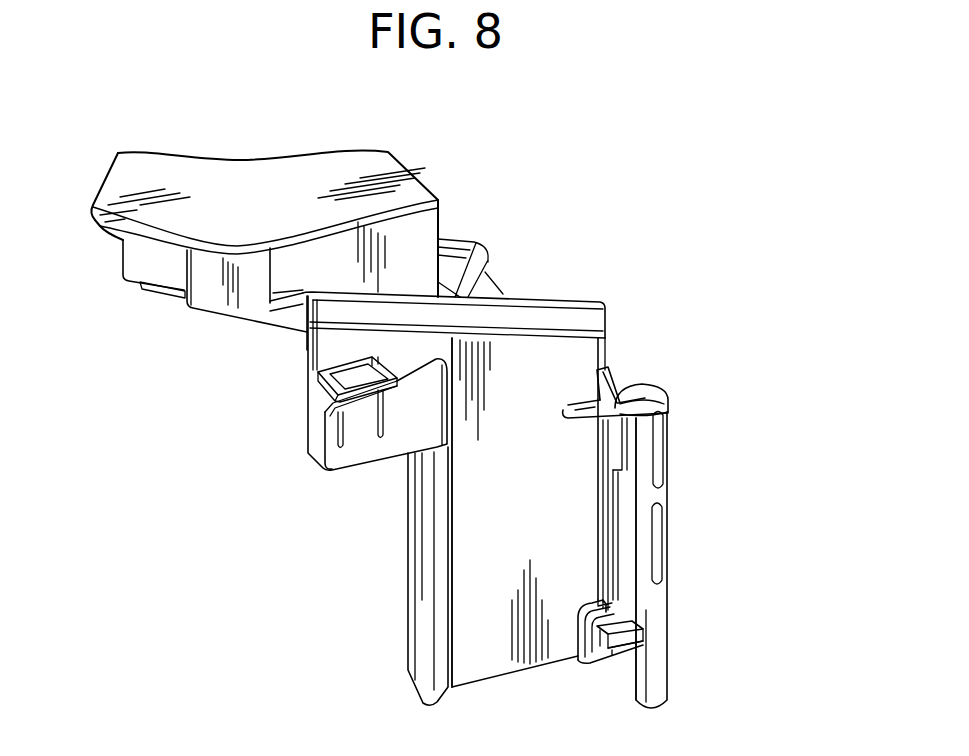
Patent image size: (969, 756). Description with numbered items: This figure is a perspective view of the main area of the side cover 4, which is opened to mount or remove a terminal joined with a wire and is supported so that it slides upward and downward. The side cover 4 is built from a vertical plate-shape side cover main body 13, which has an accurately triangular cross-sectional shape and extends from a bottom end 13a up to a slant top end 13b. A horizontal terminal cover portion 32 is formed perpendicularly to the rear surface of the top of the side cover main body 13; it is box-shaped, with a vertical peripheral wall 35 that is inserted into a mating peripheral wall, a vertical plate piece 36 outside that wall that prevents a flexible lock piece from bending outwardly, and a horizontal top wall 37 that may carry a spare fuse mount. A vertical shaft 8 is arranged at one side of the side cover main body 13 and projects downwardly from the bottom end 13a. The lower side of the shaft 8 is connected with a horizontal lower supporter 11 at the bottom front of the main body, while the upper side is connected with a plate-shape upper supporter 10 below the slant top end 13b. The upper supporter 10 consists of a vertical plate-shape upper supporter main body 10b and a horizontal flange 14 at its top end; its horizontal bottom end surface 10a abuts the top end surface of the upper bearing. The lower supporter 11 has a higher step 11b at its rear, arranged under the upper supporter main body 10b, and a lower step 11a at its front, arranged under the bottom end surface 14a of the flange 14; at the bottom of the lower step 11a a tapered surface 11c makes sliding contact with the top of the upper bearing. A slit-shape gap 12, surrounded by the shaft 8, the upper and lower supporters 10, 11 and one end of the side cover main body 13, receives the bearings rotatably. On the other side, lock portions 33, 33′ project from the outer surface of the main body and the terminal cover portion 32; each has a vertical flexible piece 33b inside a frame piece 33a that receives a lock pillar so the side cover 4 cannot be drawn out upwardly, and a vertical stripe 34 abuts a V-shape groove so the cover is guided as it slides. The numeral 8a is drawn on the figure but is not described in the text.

The side cover 4 is at (686, 135).
The shaft 8 is at (668, 516).
The lower slot 8a is at (660, 545).
The upper supporter 10 is at (812, 242).
The bottom end surface 10a is at (622, 470).
The upper supporter main body 10b is at (622, 452).
The lower supporter 11 is at (600, 660).
The lower step 11a is at (633, 627).
The higher step 11b is at (625, 622).
The tapered surface 11c is at (618, 653).
The slit-shape gap 12 is at (623, 508).
The side cover main body 13 is at (484, 628).
The bottom end 13a is at (530, 667).
The slant top end 13b is at (560, 303).
The flange 14 is at (636, 395).
The bottom end surface 14a is at (657, 424).
The terminal cover portion 32 is at (266, 153).
The lock portion 33 is at (365, 498).
The lock portion 33′ is at (418, 176).
The frame piece 33a is at (323, 405).
The flexible piece 33b is at (360, 437).
The vertical stripe 34 is at (407, 612).
The peripheral wall 35 is at (208, 290).
The plate piece 36 is at (155, 265).
The top wall 37 is at (203, 180).